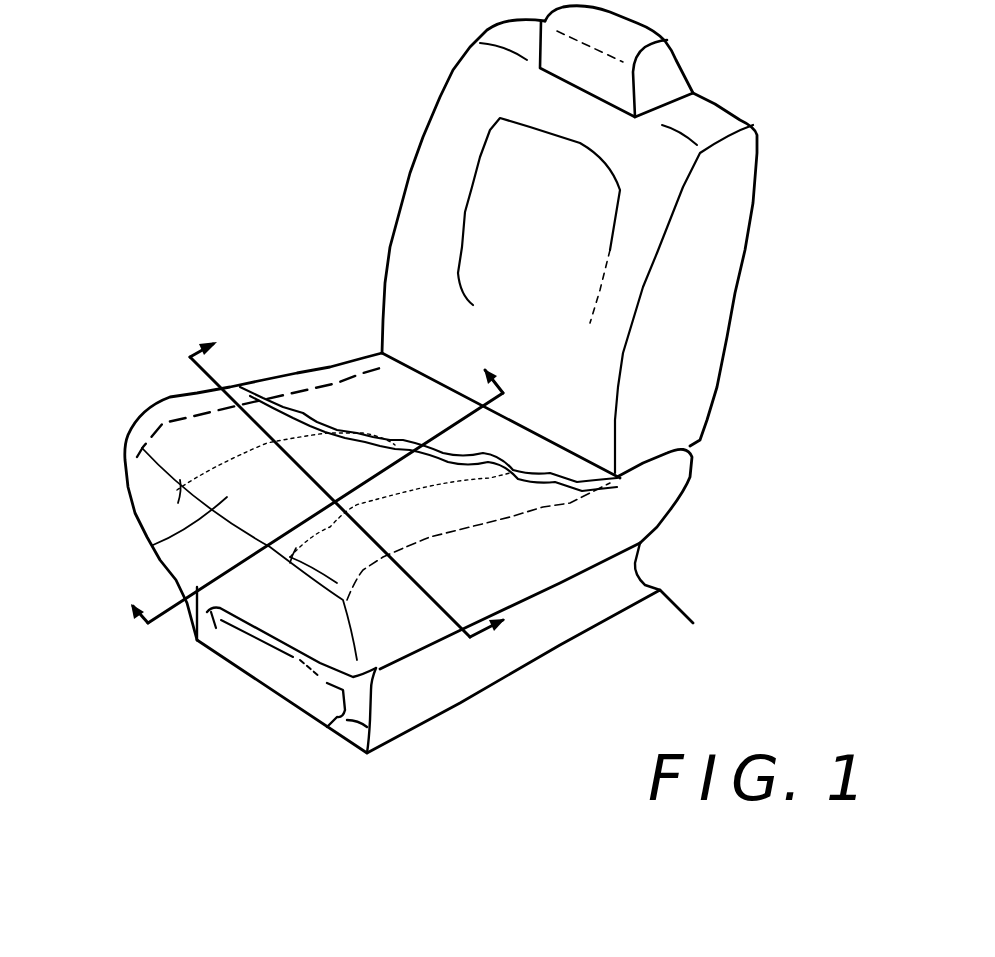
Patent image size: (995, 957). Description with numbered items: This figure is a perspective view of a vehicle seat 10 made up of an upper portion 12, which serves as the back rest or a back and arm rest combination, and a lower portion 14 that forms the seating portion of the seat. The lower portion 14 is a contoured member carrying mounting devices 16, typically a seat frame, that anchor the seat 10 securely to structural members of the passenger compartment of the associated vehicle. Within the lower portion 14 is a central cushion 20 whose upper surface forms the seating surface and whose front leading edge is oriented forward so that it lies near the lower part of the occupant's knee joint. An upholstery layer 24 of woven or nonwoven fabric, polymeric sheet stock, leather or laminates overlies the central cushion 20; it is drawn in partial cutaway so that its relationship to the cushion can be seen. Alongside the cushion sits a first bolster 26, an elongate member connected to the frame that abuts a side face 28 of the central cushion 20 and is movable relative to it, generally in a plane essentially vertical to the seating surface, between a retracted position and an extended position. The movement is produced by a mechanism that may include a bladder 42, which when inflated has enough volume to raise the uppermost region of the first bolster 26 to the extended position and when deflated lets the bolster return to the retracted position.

The vehicle seat 10 is at (779, 76).
The upper portion 12 is at (730, 292).
The lower portion 14 is at (680, 500).
The mounting devices 16 is at (690, 620).
The central cushion 20 is at (147, 540).
The upholstery layer 24 is at (408, 421).
The first bolster 26 is at (470, 601).
The side face 28 is at (320, 497).
The bladder 42 is at (163, 420).